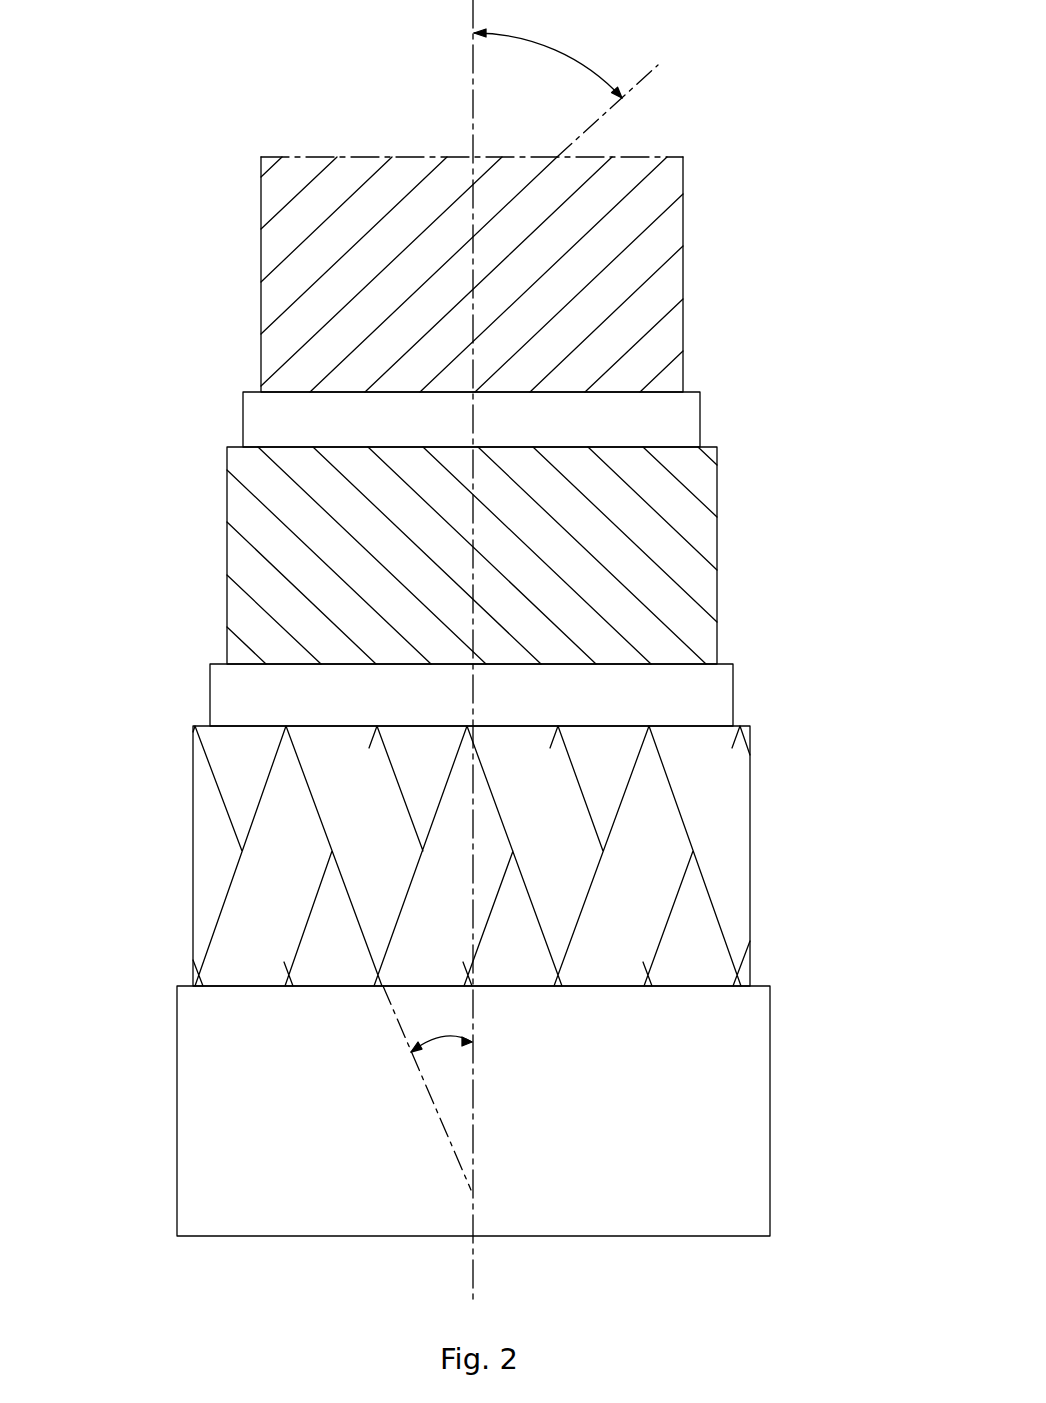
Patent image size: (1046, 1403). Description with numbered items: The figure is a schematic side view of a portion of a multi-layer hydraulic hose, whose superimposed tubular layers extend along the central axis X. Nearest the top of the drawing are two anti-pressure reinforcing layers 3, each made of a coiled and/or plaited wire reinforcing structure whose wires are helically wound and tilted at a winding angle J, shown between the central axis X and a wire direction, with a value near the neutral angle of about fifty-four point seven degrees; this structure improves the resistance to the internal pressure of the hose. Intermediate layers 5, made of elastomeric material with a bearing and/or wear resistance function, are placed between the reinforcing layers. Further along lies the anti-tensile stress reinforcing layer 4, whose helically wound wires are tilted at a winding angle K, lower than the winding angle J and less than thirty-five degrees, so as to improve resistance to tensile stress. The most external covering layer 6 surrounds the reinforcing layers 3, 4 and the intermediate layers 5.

The anti-pressure reinforcing layer 3 is at (273, 252).
The anti-tensile stress reinforcing layer 4 is at (215, 882).
The intermediate layer 5 is at (258, 423).
The covering layer 6 is at (745, 1104).
The central axis X is at (472, 99).
The winding angle J is at (563, 56).
The winding angle K is at (411, 1052).